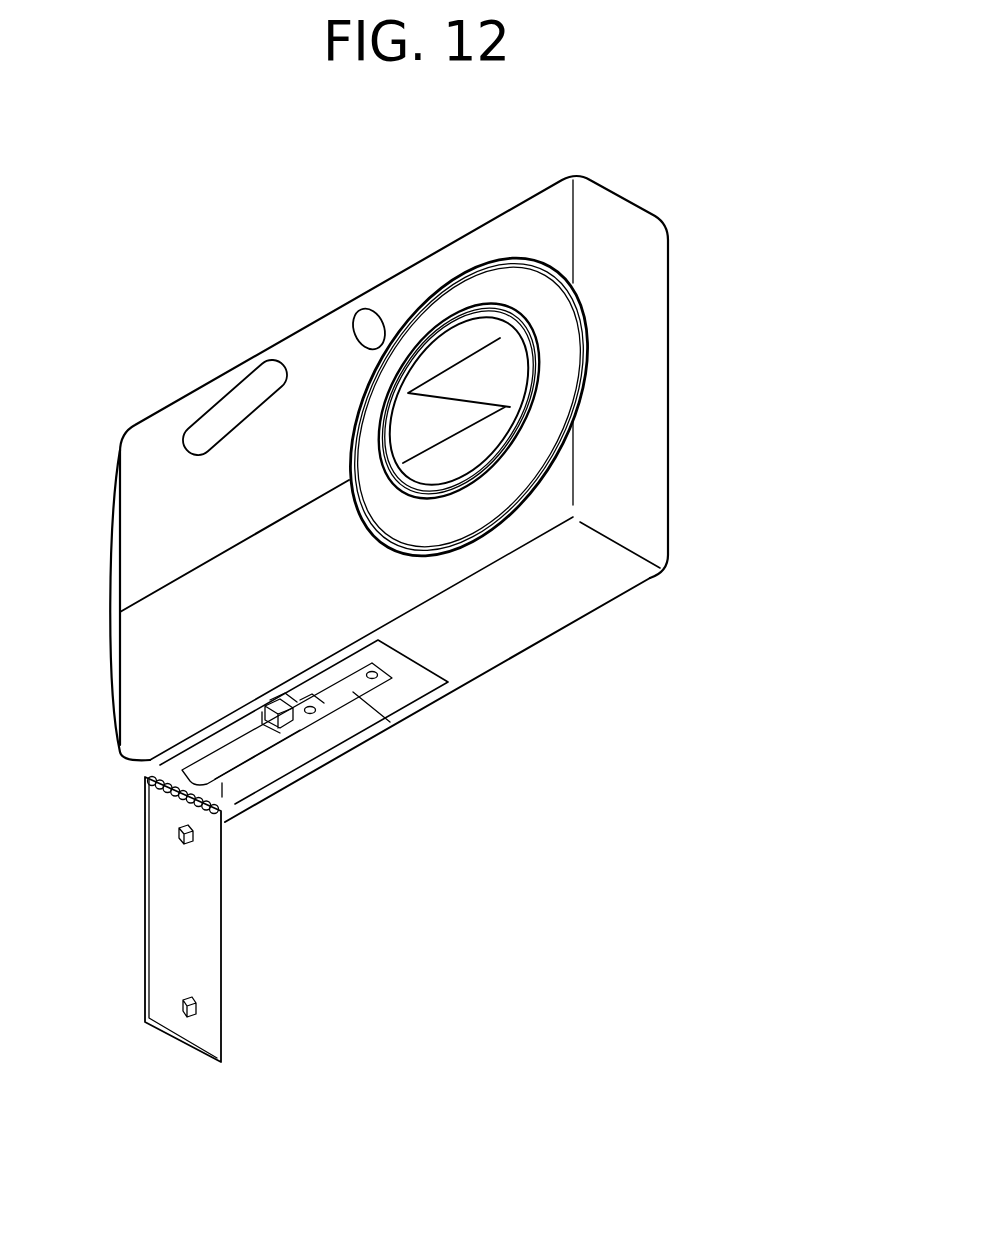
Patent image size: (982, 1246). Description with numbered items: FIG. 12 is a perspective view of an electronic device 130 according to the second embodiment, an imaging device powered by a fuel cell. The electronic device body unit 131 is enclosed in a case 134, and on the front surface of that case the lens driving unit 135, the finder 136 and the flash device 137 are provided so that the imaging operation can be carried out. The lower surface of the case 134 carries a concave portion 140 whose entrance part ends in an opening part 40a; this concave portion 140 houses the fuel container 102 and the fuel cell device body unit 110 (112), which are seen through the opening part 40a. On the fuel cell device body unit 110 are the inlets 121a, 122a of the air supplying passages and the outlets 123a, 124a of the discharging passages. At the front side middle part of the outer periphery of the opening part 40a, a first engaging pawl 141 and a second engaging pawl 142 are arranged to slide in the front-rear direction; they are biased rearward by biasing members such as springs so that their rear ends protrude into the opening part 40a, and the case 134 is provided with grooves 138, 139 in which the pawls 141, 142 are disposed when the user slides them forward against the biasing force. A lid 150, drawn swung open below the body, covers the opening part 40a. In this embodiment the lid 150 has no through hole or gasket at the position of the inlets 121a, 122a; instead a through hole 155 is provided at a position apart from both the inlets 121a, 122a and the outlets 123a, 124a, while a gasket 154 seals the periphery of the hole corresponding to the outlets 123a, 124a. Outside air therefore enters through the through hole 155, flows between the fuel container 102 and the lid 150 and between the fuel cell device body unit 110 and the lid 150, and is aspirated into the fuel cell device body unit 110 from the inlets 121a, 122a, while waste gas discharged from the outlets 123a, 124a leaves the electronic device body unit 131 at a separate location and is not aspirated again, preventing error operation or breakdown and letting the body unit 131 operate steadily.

The electronic device 130 is at (183, 221).
The electronic device body unit 131 is at (668, 258).
The case 134 is at (481, 499).
The lens driving unit 135 is at (553, 376).
The finder 136 is at (366, 307).
The flash device 137 is at (232, 390).
The opening part 40a is at (415, 660).
The fuel cell device body unit 110 is at (352, 688).
The connector housing 112 is at (350, 755).
The fuel container 102 is at (263, 745).
The inlet 121a is at (312, 708).
The inlet 122a is at (349, 640).
The outlet 123a is at (412, 708).
The outlet 124a is at (502, 716).
The groove 138 is at (272, 705).
The groove 139 is at (268, 716).
The first engaging pawl 141 is at (308, 707).
The second engaging pawl 142 is at (262, 717).
The concave portion 140 is at (224, 789).
The lid 150 is at (178, 912).
The gasket 154 is at (185, 1005).
The through hole 155 is at (178, 830).